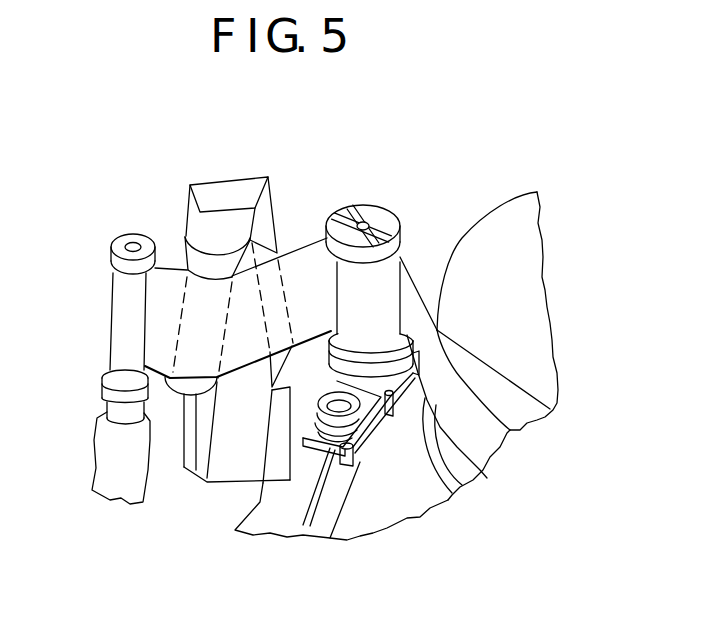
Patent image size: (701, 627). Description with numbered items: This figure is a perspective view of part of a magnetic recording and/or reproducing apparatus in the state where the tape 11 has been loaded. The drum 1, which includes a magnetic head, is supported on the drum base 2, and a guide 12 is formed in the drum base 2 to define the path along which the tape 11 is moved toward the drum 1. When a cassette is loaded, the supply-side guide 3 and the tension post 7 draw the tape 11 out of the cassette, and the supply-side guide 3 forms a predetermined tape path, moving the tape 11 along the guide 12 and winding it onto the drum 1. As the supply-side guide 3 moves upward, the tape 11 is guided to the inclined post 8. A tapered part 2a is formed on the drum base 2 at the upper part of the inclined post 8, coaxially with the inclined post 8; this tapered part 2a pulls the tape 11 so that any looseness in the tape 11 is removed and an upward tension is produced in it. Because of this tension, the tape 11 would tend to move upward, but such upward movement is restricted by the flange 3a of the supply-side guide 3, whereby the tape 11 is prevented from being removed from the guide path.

The drum 1 is at (492, 218).
The drum base 2 is at (213, 255).
The tapered part 2a is at (185, 250).
The supply-side guide 3 is at (386, 265).
The flange 3a is at (370, 206).
The tension post 7 is at (112, 318).
The inclined post 8 is at (185, 392).
The tape 11 is at (298, 251).
The guide 12 is at (332, 510).